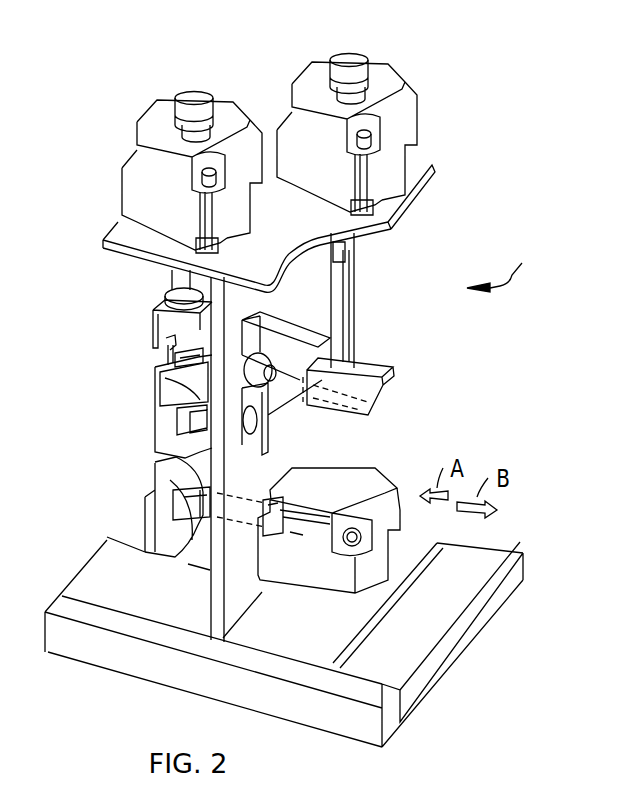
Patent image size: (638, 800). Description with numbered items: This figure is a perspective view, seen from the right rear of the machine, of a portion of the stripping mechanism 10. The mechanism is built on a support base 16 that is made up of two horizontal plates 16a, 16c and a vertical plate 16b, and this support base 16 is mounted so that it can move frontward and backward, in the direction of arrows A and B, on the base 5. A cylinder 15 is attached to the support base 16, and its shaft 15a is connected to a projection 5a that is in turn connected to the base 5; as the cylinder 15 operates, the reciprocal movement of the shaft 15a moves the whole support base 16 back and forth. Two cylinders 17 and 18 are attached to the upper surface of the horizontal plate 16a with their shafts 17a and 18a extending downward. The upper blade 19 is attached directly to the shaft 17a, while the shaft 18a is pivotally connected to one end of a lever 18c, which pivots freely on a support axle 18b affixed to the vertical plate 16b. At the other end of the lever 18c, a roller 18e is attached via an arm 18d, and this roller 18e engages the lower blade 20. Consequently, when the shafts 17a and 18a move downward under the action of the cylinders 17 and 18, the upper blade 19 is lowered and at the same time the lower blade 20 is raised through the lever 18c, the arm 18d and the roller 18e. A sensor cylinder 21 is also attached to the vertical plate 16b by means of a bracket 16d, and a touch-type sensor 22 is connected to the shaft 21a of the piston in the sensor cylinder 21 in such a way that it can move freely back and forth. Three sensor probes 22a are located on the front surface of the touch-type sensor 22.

The base 5 is at (148, 668).
The projection 5a is at (140, 518).
The stripping mechanism 10 is at (510, 271).
The cylinder 15 is at (350, 477).
The shaft 15a is at (173, 540).
The support base 16 is at (432, 164).
The horizontal plate 16a is at (397, 201).
The vertical plate 16b is at (283, 424).
The horizontal plate 16c is at (340, 632).
The bracket 16d is at (270, 340).
The cylinder 17 is at (163, 110).
The shaft 17a is at (170, 282).
The cylinder 18 is at (387, 78).
The shaft 18a is at (355, 240).
The support axle 18b is at (385, 392).
The lever 18c is at (283, 423).
The arm 18d is at (170, 467).
The roller 18e is at (180, 433).
The upper blade 19 is at (152, 327).
The lower blade 20 is at (157, 385).
The sensor cylinder 21 is at (358, 372).
The shaft 21a is at (302, 335).
The touch-type sensor 22 is at (175, 408).
The sensor probes 22a is at (166, 356).